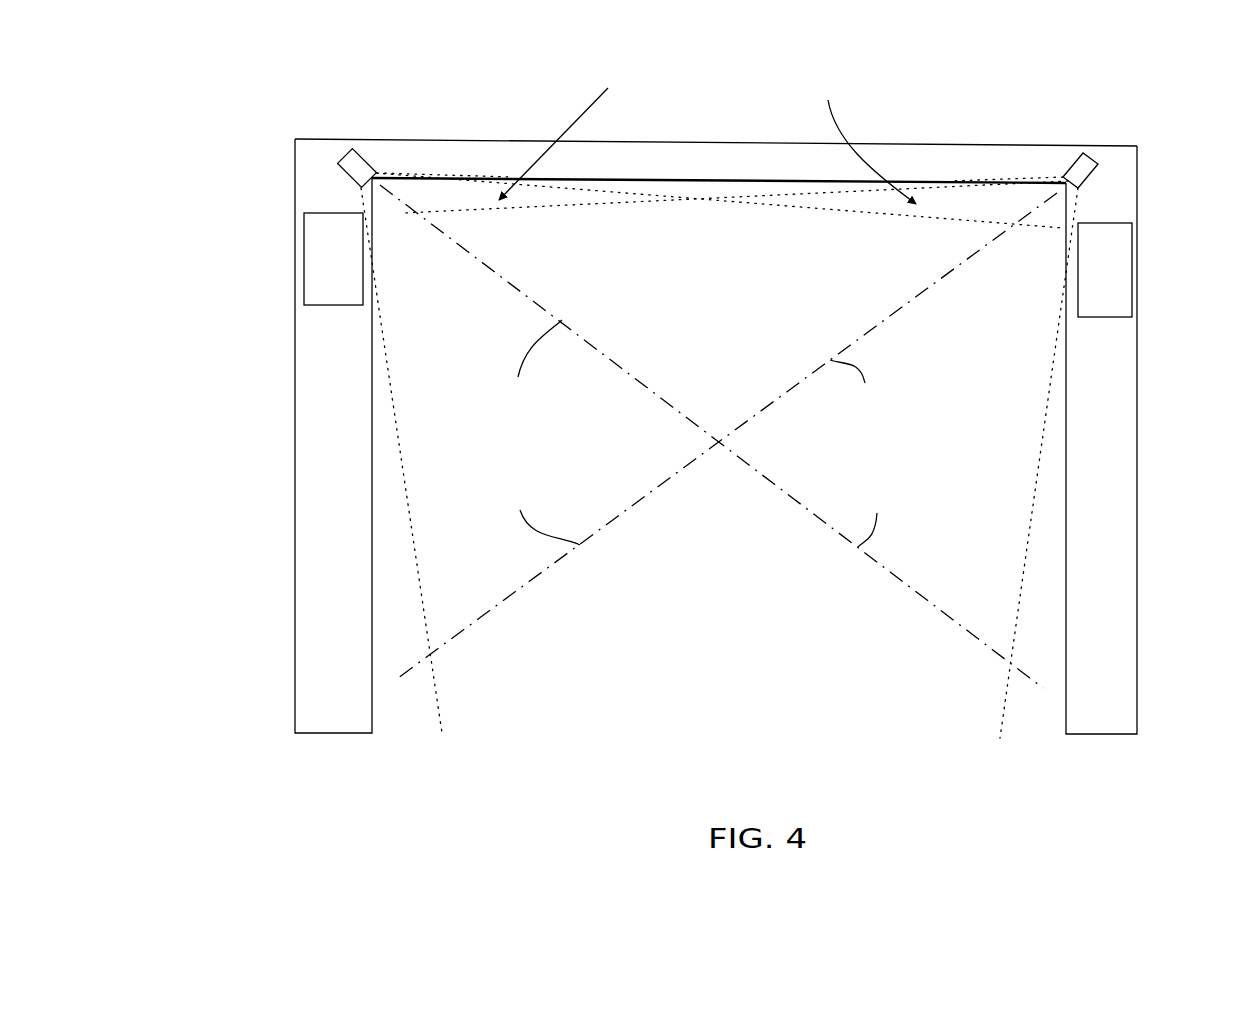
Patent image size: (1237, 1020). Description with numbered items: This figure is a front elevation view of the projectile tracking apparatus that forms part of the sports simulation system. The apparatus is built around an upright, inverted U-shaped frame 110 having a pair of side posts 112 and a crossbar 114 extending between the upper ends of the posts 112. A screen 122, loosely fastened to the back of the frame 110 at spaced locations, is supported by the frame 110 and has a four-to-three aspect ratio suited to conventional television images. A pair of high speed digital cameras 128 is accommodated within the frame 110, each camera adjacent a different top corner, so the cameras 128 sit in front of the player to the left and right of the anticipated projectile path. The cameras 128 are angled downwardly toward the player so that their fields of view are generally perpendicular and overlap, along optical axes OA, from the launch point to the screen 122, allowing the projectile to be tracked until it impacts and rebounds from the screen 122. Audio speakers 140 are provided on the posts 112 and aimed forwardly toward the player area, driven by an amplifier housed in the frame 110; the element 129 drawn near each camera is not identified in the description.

The frame 110 is at (685, 417).
The side posts 112 is at (325, 627).
The crossbar 114 is at (948, 170).
The screen 122 is at (749, 592).
The high speed digital cameras 128 is at (356, 166).
The camera field boundary 129 is at (405, 175).
The audio speakers 140 is at (317, 257).